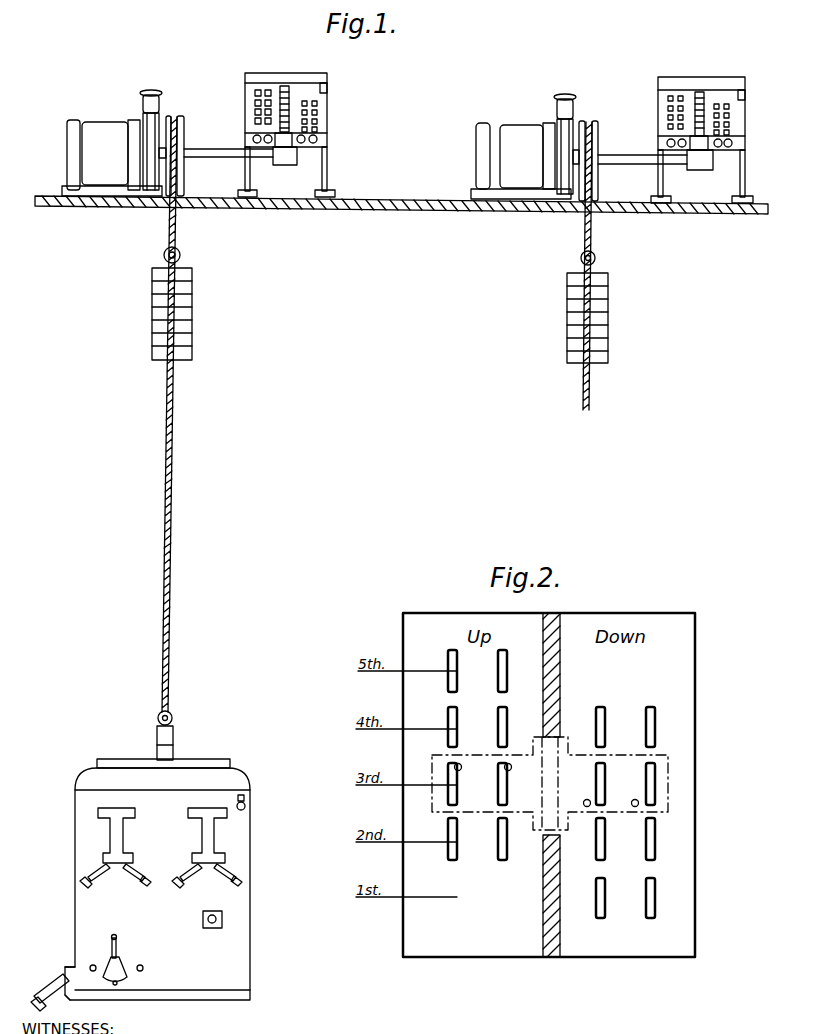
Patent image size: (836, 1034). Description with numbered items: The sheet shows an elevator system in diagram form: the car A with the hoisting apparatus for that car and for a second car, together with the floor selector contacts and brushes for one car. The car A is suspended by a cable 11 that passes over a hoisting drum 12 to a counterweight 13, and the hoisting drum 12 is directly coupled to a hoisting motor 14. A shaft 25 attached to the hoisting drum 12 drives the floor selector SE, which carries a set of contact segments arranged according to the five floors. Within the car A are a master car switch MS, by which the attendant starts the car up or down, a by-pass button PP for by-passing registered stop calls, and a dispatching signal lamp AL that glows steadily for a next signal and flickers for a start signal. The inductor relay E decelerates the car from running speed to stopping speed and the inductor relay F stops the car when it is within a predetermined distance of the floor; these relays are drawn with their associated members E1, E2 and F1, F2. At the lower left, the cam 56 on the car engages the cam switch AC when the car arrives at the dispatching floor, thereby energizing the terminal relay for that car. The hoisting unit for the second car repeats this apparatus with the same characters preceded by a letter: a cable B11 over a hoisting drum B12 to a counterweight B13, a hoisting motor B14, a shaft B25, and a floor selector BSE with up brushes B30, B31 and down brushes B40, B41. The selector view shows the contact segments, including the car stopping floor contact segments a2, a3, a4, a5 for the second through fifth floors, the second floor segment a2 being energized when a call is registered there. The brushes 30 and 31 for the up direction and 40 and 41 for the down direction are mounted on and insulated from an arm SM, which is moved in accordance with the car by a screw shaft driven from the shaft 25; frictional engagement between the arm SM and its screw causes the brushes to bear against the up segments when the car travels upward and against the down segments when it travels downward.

In FIG. 1, the cable 11 is at (170, 598).
In FIG. 1, the hoisting drum 12 is at (186, 121).
In FIG. 1, the counterweight 13 is at (193, 307).
In FIG. 1, the hoisting motor 14 is at (102, 127).
In FIG. 1, the shaft 25 is at (224, 158).
In FIG. 1, the up-direction brush 30 is at (254, 138).
In FIG. 2, the up-direction brush 30 is at (462, 767).
In FIG. 1, the up-direction brush 31 is at (264, 141).
In FIG. 2, the up-direction brush 31 is at (512, 767).
In FIG. 1, the down-direction brush 40 is at (305, 138).
In FIG. 2, the down-direction brush 40 is at (587, 800).
In FIG. 1, the down-direction brush 41 is at (318, 140).
In FIG. 2, the down-direction brush 41 is at (635, 800).
In FIG. 1, the floor selector SE is at (283, 63).
In FIG. 1, the car A is at (73, 929).
In FIG. 1, the dispatching signal lamp AL is at (248, 800).
In FIG. 1, the inductor relay E is at (109, 829).
In FIG. 1, the relay contact E1 is at (95, 883).
In FIG. 1, the relay contact E2 is at (134, 883).
In FIG. 1, the inductor relay F is at (216, 834).
In FIG. 1, the relay contact F1 is at (185, 883).
In FIG. 1, the relay contact F2 is at (228, 883).
In FIG. 1, the by-pass button PP is at (212, 928).
In FIG. 1, the master car switch MS is at (122, 933).
In FIG. 1, the cam 56 is at (67, 968).
In FIG. 1, the cam switch AC is at (47, 985).
In FIG. 1, the cable B11 is at (595, 392).
In FIG. 1, the hoisting drum B12 is at (598, 123).
In FIG. 1, the counterweight B13 is at (608, 322).
In FIG. 1, the hoisting motor B14 is at (508, 130).
In FIG. 1, the shaft B25 is at (633, 165).
In FIG. 1, the up-direction brush B30 is at (667, 142).
In FIG. 1, the up-direction brush B31 is at (665, 145).
In FIG. 1, the down-direction brush B40 is at (722, 140).
In FIG. 1, the down-direction brush B41 is at (735, 143).
In FIG. 1, the floor selector BSE is at (712, 70).
In FIG. 2, the car stopping floor contact segment a2 is at (457, 849).
In FIG. 2, the car stopping floor contact segment a3 is at (457, 796).
In FIG. 2, the car stopping floor contact segment a4 is at (457, 724).
In FIG. 2, the car stopping floor contact segment a5 is at (457, 660).
In FIG. 2, the arm SM is at (671, 752).